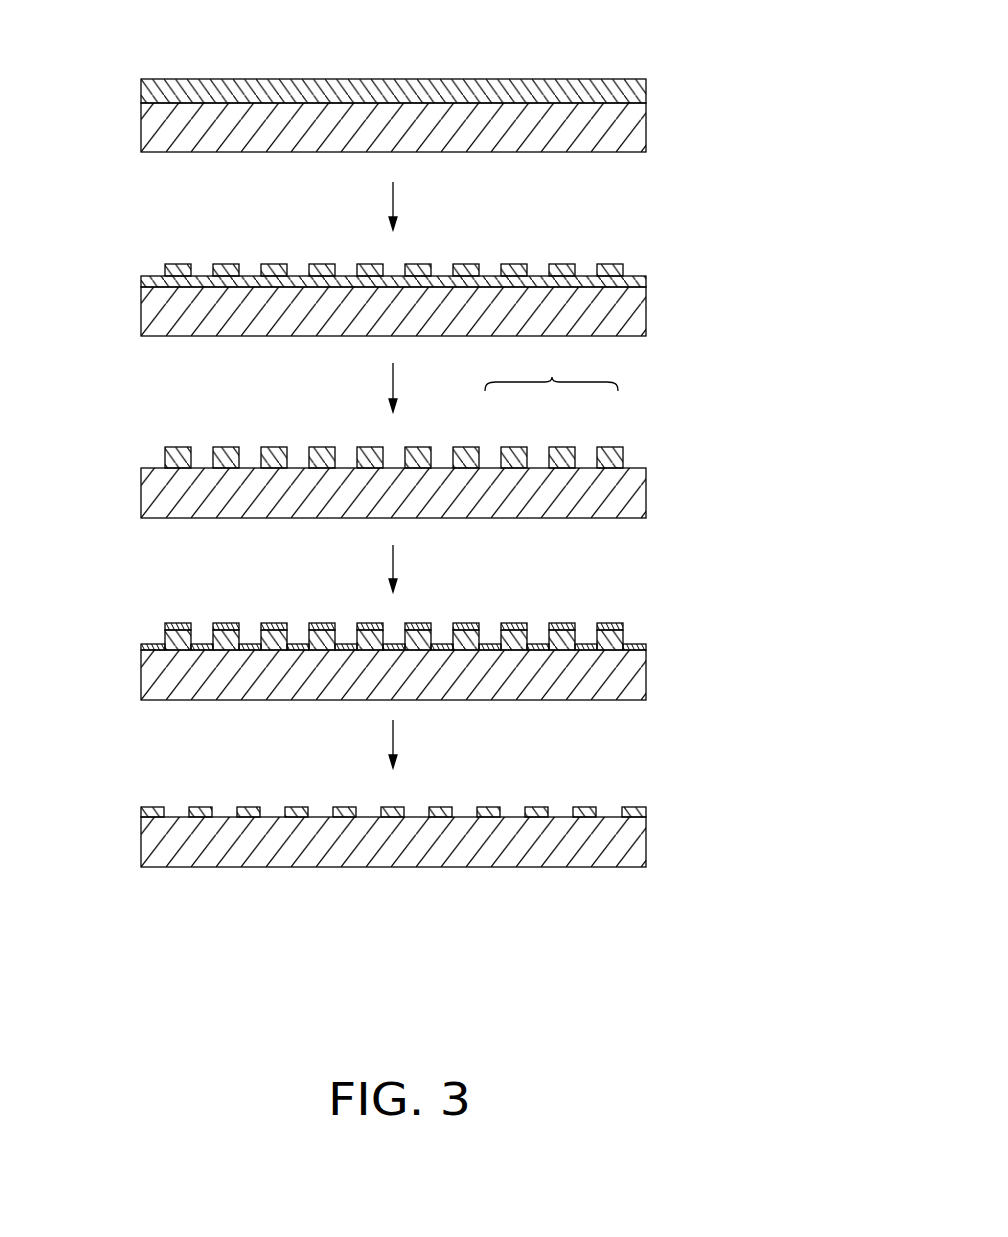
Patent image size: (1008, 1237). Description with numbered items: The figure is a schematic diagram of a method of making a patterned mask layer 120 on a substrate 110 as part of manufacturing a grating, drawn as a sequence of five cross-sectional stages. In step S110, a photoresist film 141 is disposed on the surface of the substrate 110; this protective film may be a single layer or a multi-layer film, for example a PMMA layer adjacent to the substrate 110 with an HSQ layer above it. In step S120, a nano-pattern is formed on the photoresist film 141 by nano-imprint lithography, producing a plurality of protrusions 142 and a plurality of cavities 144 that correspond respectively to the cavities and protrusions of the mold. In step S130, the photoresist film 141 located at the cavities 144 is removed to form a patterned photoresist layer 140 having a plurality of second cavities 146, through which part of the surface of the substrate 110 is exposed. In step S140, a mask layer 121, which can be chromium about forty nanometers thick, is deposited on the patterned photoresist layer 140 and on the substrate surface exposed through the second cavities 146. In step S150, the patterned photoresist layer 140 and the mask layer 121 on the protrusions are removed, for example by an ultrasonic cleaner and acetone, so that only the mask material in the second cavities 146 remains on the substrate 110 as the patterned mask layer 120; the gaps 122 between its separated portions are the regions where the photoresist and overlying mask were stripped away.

The substrate 110 is at (638, 131).
The photoresist film 141 is at (603, 88).
The cavities 144 is at (493, 272).
The protrusions 142 is at (613, 266).
The patterned photoresist layer 140 is at (551, 368).
The second cavities 146 is at (492, 453).
The mask layer 121 is at (606, 623).
The patterned mask layer 120 is at (637, 810).
The gaps 122 is at (462, 810).
The step of disposing photoresist film S110 is at (135, 57).
The step of forming nano-pattern S120 is at (155, 227).
The step of forming patterned photoresist layer S130 is at (172, 405).
The step of depositing mask layer S140 is at (165, 592).
The step of forming patterned mask layer S150 is at (150, 774).